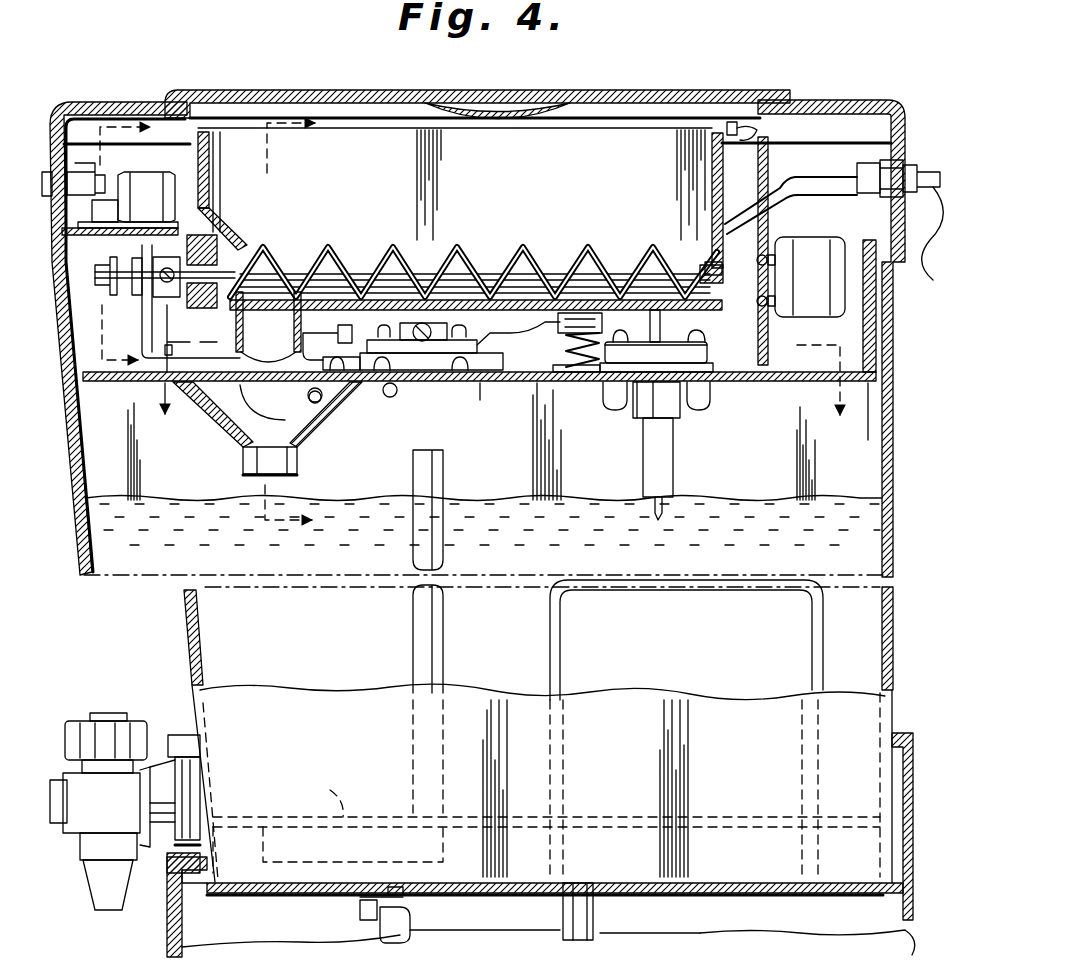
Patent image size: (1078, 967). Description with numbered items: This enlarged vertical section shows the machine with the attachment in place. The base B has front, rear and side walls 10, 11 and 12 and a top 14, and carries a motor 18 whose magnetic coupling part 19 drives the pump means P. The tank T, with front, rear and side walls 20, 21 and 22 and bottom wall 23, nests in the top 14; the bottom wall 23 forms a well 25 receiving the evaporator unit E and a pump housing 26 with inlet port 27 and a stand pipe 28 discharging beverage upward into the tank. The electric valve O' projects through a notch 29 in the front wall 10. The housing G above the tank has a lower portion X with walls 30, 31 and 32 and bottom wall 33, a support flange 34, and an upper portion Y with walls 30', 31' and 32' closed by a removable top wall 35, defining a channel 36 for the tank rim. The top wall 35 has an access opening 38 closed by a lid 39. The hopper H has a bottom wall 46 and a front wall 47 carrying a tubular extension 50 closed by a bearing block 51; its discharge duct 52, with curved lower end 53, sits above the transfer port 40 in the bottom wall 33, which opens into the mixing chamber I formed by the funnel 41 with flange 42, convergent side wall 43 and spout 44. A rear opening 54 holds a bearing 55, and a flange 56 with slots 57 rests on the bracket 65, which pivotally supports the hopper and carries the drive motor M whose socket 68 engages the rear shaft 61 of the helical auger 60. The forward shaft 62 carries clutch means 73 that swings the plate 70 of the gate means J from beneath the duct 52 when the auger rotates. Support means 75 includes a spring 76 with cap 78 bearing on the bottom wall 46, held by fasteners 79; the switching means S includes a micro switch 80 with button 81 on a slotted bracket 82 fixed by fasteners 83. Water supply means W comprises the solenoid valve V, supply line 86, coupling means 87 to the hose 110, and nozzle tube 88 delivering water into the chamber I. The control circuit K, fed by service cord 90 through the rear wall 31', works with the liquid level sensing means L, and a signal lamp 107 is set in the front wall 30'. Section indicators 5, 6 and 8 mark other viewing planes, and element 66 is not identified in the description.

The front wall 10 is at (166, 945).
The rear wall 11 is at (819, 945).
The side walls 12 is at (492, 930).
The horizontal top 14 is at (912, 733).
The electric motor 18 is at (410, 937).
The magnetic drive coupling part 19 is at (405, 905).
The front wall 20 is at (80, 572).
The rear wall 21 is at (895, 520).
The side walls 22 is at (483, 506).
The bottom wall 23 is at (578, 817).
The well 25 is at (555, 645).
The pump housing 26 is at (393, 817).
The fluid inlet port 27 is at (323, 791).
The stand pipe 28 is at (446, 630).
The notch 29 is at (187, 743).
The front wall 30 is at (109, 405).
The front wall 30' is at (127, 102).
The rear wall 31 is at (516, 315).
The rear wall 31' is at (929, 294).
The side walls 32 is at (866, 420).
The side walls 32' is at (852, 136).
The bottom wall 33 is at (490, 365).
The support flange 34 is at (893, 245).
The top wall 35 is at (840, 100).
The downwardly opening channel 36 is at (882, 320).
The access opening 38 is at (192, 90).
The lid or cover 39 is at (215, 100).
The transfer port 40 is at (222, 428).
The conical funnel 41 is at (312, 440).
The upper horizontal flange 42 is at (388, 392).
The side wall 43 is at (300, 452).
The discharge spout 44 is at (243, 458).
The bottom wall 46 is at (535, 283).
The front end wall 47 is at (214, 158).
The cylindrical tubular extension 50 is at (238, 252).
The bearing block 51 is at (250, 262).
The concentrate discharge duct 52 is at (282, 286).
The lower open end 53 is at (307, 465).
The lower opening 54 is at (705, 266).
The bearing 55 is at (737, 250).
The mounting flange 56 is at (772, 133).
The slots 57 is at (733, 133).
The helical auger 60 is at (578, 285).
The drive shaft 61 is at (740, 300).
The drive shaft 62 is at (240, 270).
The mounting bracket 65 is at (766, 383).
The lid fitting 66 is at (740, 120).
The polygonal drive socket 68 is at (780, 255).
The plate 70 is at (272, 360).
The clutch means 73 is at (128, 238).
The support means 75 is at (560, 390).
The helical compression spring 76 is at (605, 297).
The cap 78 is at (600, 282).
The screw fasteners 79 is at (677, 402).
The micro switch 80 is at (473, 290).
The actuating member 81 is at (433, 290).
The slotted bracket 82 is at (480, 363).
The screw fasteners 83 is at (500, 290).
The water supply line 86 is at (548, 283).
The coupling means 87 is at (868, 165).
The nozzle tube 88 is at (345, 395).
The service cord 90 is at (920, 255).
The signal lamp 107 is at (60, 108).
The water supply hose 110 is at (918, 172).
The section line 5- 5 is at (300, 340).
The section line 6- 6 is at (140, 237).
The section line 8- 8 is at (490, 398).
The base B is at (164, 933).
The evaporator unit E is at (558, 912).
The housing G is at (97, 98).
The hopper H is at (385, 118).
The mixing chamber I is at (226, 442).
The gate means J is at (163, 327).
The control circuit K is at (180, 204).
The liquid level sensing means L is at (637, 440).
The electric drive motor M is at (810, 277).
The electrically operated valve O' is at (100, 782).
The pump means P is at (292, 905).
The switching means S is at (435, 358).
The tank T is at (72, 523).
The solenoid actuated valve V is at (427, 298).
The water supply means W is at (800, 172).
The lower portion X is at (87, 392).
The upper portion Y is at (70, 98).